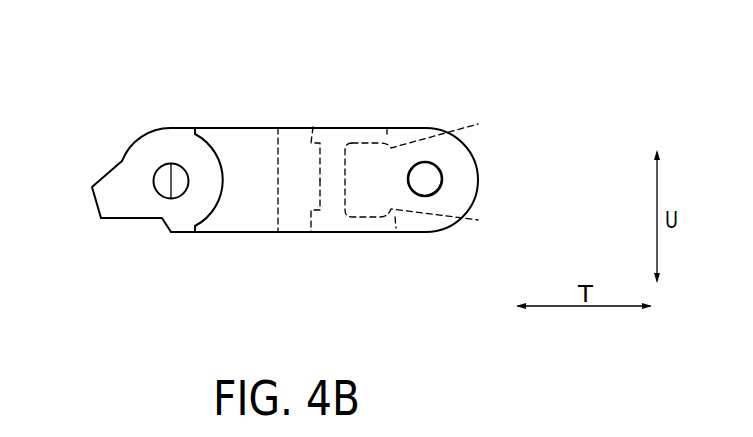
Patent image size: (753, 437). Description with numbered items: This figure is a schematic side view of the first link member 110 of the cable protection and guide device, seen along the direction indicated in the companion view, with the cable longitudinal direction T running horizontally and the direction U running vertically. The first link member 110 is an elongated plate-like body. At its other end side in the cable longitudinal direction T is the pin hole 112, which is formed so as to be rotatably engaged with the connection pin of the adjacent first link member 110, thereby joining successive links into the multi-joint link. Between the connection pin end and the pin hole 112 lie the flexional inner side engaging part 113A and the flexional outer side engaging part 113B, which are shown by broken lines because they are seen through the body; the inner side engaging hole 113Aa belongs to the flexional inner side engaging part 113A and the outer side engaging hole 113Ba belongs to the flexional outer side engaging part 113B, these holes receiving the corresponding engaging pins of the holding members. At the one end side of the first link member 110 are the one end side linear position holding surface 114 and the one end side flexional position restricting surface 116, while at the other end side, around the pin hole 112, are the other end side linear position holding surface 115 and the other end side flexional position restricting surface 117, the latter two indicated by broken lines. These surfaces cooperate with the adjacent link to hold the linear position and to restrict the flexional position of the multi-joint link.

The first link member 110 is at (93, 81).
The pin hole 112 is at (442, 178).
The flexional inner side engaging part 113A is at (219, 180).
The flexional outer side engaging part 113B is at (397, 180).
The inner side engaging hole 113Aa is at (311, 232).
The outer side engaging hole 113Ba is at (313, 127).
The one end side linear position holding surface 114 is at (122, 219).
The other end side linear position holding surface 115 is at (478, 220).
The one end side flexional position restricting surface 116 is at (102, 181).
The other end side flexional position restricting surface 117 is at (478, 124).